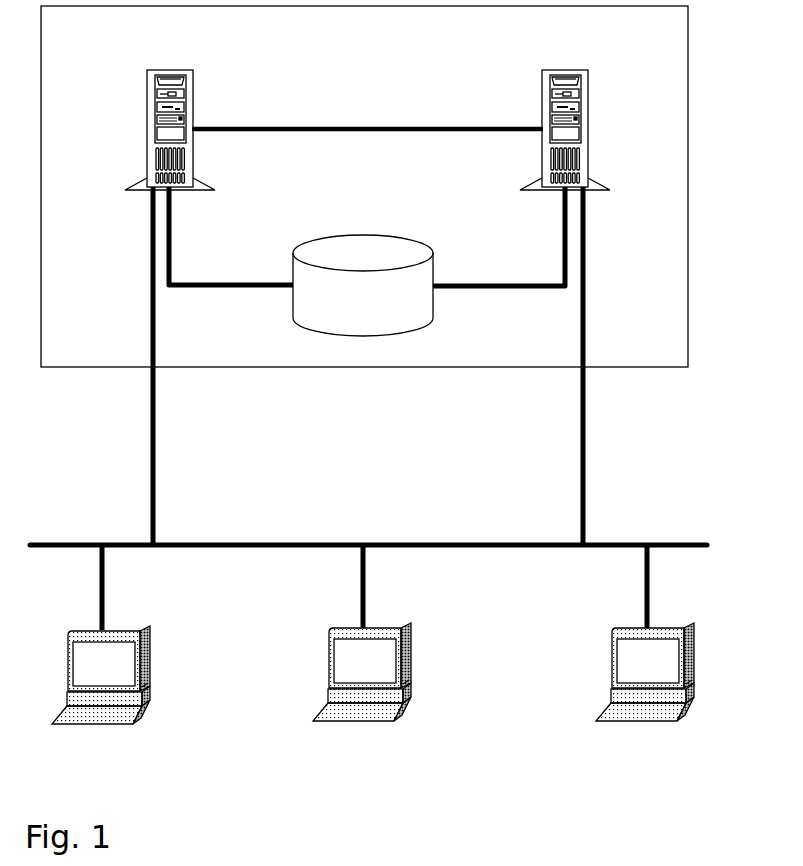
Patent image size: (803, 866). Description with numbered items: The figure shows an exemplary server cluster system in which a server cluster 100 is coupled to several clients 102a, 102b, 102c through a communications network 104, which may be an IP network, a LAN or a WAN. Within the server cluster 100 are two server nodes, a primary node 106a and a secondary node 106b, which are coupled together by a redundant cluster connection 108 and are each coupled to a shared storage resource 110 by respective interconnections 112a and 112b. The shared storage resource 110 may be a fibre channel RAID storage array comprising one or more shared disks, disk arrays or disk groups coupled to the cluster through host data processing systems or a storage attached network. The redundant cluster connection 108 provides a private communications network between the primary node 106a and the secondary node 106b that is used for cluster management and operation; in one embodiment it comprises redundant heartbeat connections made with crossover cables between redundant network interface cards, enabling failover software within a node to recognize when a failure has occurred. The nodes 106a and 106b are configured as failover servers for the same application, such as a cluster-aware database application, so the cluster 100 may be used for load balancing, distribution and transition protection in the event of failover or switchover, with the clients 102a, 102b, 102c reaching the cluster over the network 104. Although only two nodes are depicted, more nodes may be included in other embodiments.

The server cluster 100 is at (108, 43).
The client 102a is at (150, 628).
The client 102b is at (411, 627).
The client 102c is at (695, 627).
The communications network 104 is at (317, 544).
The primary node 106a is at (194, 70).
The secondary node 106b is at (589, 70).
The redundant cluster connection 108 is at (346, 128).
The shared storage resource 110 is at (397, 236).
The interconnection 112a is at (211, 283).
The interconnection 112b is at (469, 284).